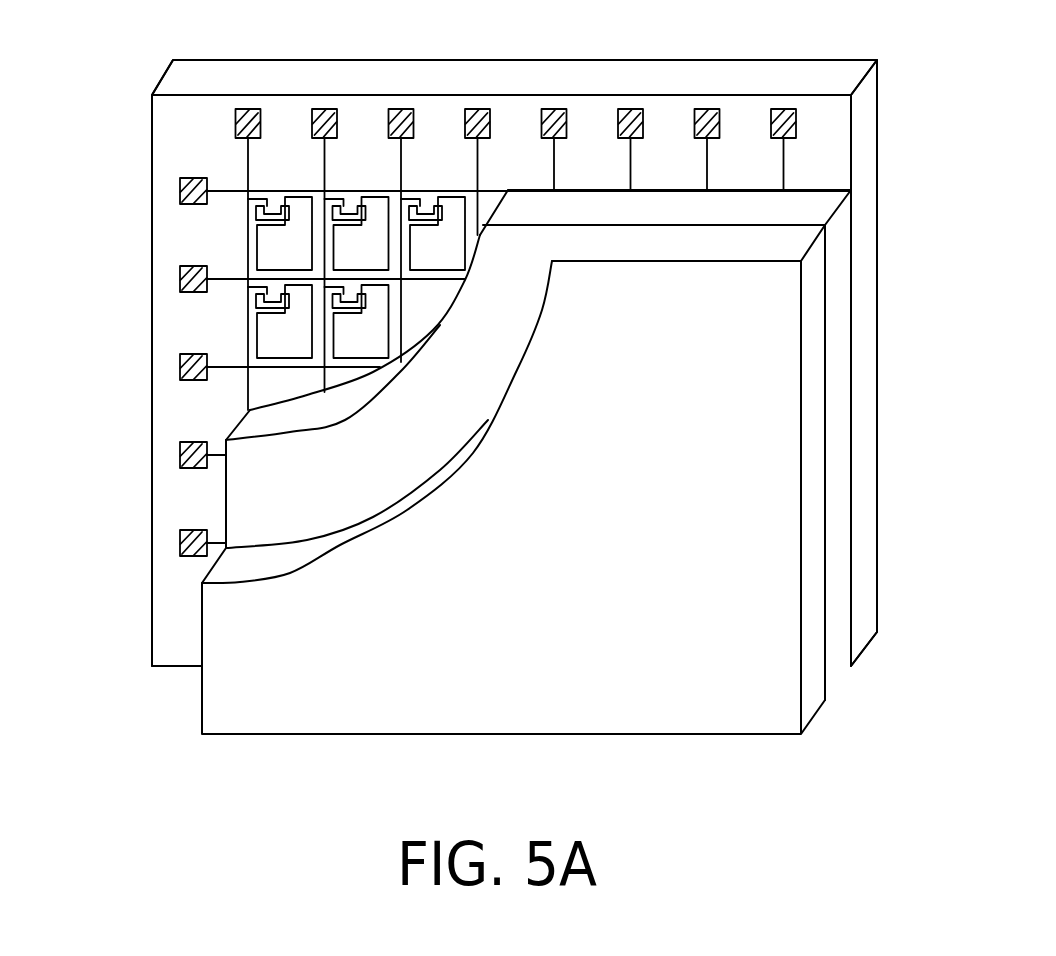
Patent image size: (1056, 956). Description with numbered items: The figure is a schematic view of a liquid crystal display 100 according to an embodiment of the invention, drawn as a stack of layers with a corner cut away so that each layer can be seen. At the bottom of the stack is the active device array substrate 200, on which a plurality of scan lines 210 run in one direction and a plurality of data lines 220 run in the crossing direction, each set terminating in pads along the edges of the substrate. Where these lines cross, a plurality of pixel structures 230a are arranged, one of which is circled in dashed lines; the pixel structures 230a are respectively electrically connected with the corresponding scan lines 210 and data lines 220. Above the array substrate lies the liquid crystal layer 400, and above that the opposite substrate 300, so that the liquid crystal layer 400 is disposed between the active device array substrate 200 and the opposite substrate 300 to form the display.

The liquid crystal display 100 is at (912, 295).
The active device array substrate 200 is at (867, 632).
The scan lines 210 is at (227, 192).
The data lines 220 is at (248, 160).
The pixel structures 230a is at (357, 180).
The opposite substrate 300 is at (817, 695).
The liquid crystal layer 400 is at (842, 665).